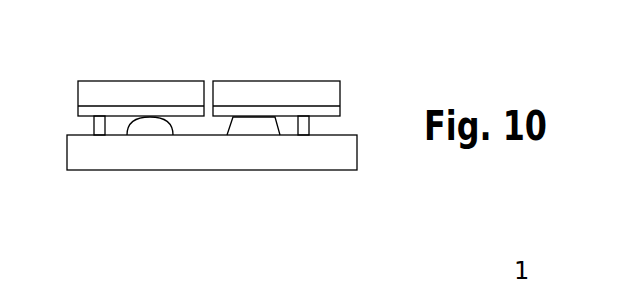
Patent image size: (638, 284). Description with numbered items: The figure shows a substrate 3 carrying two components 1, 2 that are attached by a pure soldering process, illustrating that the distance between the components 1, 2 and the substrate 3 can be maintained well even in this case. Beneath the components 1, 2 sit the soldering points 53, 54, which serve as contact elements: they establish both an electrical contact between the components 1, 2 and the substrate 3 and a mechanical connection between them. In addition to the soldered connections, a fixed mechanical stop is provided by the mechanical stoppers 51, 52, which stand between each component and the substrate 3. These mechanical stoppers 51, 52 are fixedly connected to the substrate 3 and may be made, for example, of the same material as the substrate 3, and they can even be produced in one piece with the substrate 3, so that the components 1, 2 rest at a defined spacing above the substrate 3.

The component 1 is at (131, 80).
The component 2 is at (272, 80).
The substrate 3 is at (345, 170).
The mechanical stopper 51 is at (104, 135).
The mechanical stopper 52 is at (303, 135).
The soldering point 53 is at (150, 135).
The soldering point 54 is at (252, 135).